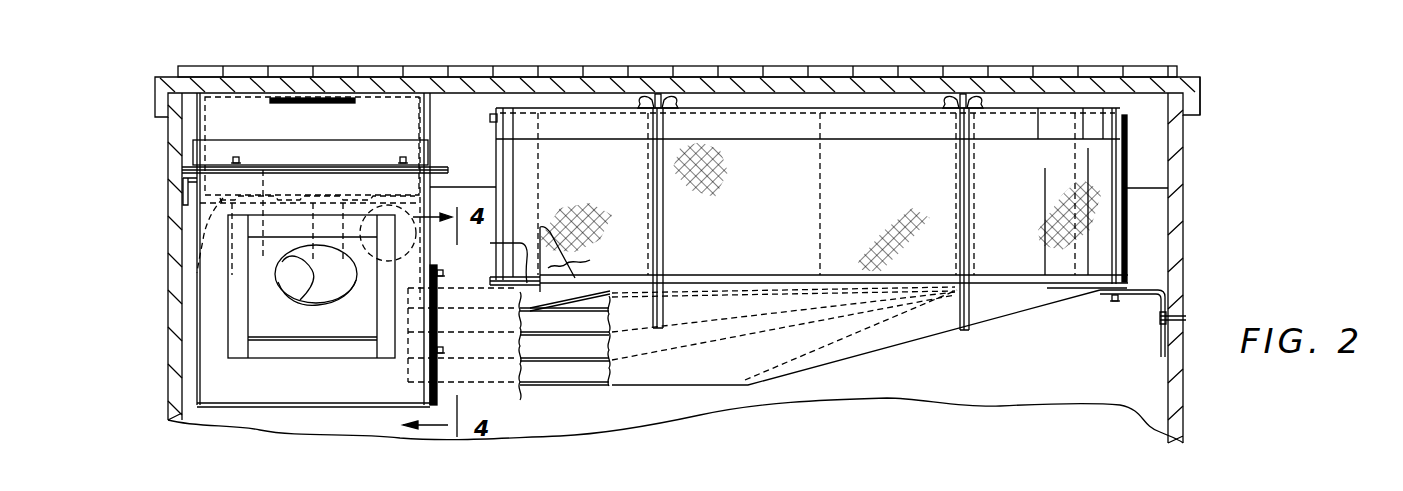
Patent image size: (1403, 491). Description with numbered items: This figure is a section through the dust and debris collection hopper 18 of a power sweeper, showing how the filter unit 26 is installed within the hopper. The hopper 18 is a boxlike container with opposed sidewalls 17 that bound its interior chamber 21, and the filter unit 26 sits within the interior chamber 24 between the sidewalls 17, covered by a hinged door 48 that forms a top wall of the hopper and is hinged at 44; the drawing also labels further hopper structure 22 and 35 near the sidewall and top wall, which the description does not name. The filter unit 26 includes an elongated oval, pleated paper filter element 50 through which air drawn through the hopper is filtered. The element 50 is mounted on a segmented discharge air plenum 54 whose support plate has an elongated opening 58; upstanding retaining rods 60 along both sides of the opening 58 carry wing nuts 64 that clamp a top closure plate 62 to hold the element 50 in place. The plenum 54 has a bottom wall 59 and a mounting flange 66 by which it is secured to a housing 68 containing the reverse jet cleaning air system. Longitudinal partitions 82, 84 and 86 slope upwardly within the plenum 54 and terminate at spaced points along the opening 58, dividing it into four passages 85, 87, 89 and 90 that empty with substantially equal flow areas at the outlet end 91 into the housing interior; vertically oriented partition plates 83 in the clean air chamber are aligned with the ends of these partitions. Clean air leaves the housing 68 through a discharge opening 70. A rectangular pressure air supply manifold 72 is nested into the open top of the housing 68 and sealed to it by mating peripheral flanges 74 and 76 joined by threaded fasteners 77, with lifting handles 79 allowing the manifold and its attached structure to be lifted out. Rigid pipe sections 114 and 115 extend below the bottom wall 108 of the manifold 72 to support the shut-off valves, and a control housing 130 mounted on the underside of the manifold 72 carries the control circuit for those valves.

The sidewall 17 is at (167, 374).
The dust and debris collection hopper 18 is at (1185, 222).
The interior chamber 21 is at (1152, 151).
The bracket 22 is at (1140, 192).
The interior chamber 24 is at (972, 391).
The filter unit 26 is at (760, 104).
The top beam 35 is at (892, 3).
The hinge 44 is at (1098, 67).
The hinged door 48 is at (657, 94).
The filter element 50 is at (1128, 242).
The discharge air plenum 54 is at (795, 366).
The elongated opening 58 is at (562, 266).
The bottom wall 59 is at (520, 390).
The retaining rod 60 is at (665, 312).
The top closure plate 62 is at (600, 108).
The wing nut 64 is at (672, 108).
The mounting flange 66 is at (457, 398).
The housing 68 is at (274, 407).
The clean air flow discharge opening 70 is at (306, 298).
The pressure air supply manifold 72 is at (263, 93).
The peripheral flange 74 is at (212, 158).
The peripheral flange 76 is at (183, 229).
The threaded fastener 77 is at (235, 158).
The lifting handle 79 is at (341, 96).
The longitudinal partition 82 is at (615, 300).
The partition plate 83 is at (650, 172).
The longitudinal partition 84 is at (612, 296).
The air flow passage 85 is at (490, 243).
The longitudinal partition 86 is at (560, 361).
The air flow passage 87 is at (575, 310).
The air flow passage 89 is at (565, 335).
The air flow passage 90 is at (596, 370).
The outlet end 91 is at (385, 385).
The bottom wall 108 is at (207, 243).
The pipe section 114 is at (282, 203).
The pipe section 115 is at (363, 250).
The housing 130 is at (443, 276).